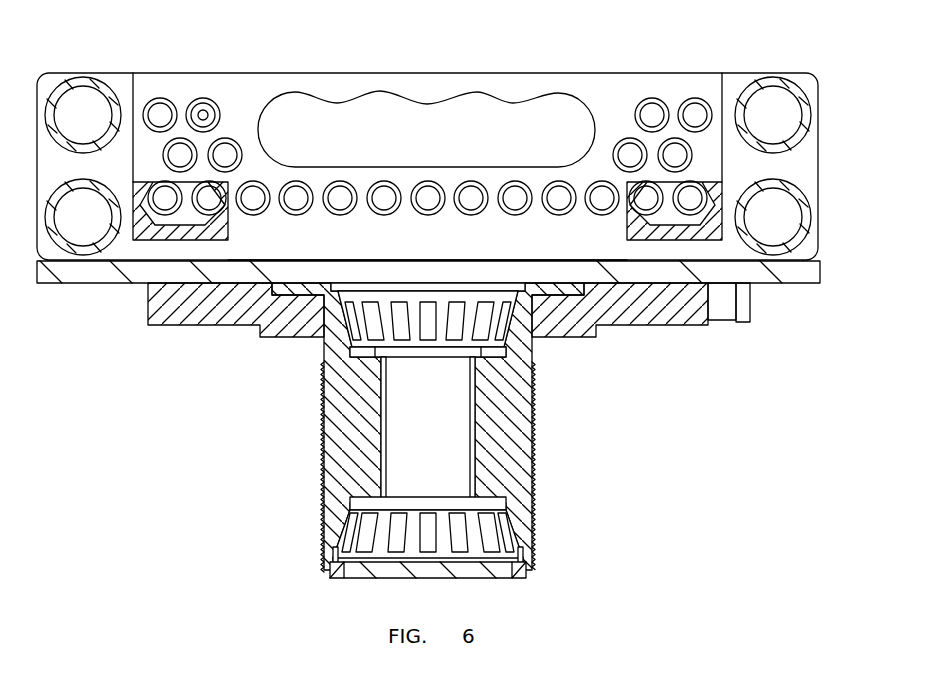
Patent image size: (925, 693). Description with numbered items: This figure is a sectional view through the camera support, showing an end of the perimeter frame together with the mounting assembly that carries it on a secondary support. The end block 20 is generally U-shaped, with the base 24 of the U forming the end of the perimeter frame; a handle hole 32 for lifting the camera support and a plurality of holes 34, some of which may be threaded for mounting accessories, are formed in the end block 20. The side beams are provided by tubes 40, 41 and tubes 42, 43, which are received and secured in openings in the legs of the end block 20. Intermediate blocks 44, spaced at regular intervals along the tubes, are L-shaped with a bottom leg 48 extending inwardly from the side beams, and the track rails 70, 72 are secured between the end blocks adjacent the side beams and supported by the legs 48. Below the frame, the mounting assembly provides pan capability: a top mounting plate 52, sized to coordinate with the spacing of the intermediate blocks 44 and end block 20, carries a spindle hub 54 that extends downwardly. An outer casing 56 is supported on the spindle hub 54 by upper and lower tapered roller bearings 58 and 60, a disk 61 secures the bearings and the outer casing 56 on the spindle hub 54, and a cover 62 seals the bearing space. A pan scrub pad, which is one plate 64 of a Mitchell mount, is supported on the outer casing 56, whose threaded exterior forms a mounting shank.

The end block 20 is at (306, 59).
The base 24 is at (324, 244).
The handle hole 32 is at (480, 92).
The holes 34 is at (162, 104).
The tube 40 is at (748, 82).
The tube 41 is at (793, 252).
The tube 42 is at (72, 77).
The tube 43 is at (62, 254).
The intermediate block 44 is at (128, 78).
The bottom leg 48 is at (633, 252).
The top mounting plate 52 is at (103, 275).
The spindle hub 54 is at (443, 432).
The outer casing 56 is at (338, 421).
The upper tapered roller bearing 58 is at (360, 326).
The lower tapered roller bearing 60 is at (363, 527).
The disk 61 is at (343, 571).
The cover 62 is at (497, 577).
The plate 64 is at (658, 308).
The track rail 70 is at (697, 242).
The track rail 72 is at (215, 234).